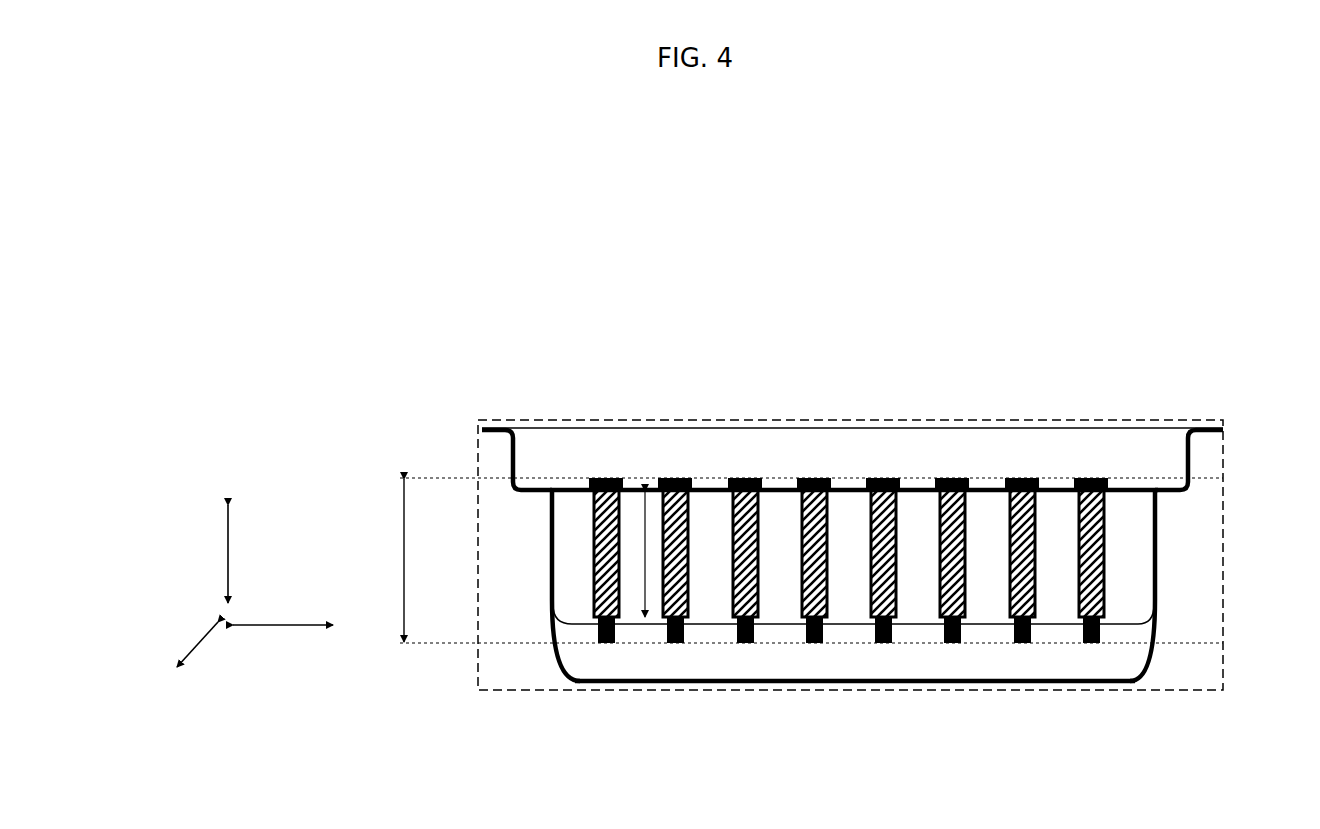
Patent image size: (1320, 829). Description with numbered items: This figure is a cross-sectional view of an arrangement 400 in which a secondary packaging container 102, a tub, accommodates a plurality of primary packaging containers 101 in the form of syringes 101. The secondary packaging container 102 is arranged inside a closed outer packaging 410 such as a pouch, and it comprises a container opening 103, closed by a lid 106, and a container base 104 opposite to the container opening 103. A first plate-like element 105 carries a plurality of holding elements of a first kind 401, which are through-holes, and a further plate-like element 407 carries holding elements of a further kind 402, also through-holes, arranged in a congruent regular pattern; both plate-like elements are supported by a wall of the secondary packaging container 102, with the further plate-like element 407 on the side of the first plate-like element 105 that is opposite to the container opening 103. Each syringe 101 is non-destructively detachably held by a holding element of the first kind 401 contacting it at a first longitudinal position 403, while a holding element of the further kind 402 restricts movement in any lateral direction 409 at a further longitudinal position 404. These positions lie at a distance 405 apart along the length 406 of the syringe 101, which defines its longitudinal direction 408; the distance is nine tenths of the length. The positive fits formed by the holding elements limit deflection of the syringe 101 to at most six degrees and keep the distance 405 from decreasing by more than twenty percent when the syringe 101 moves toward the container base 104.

The arrangement 400 is at (672, 136).
The primary packaging container 101 is at (1105, 580).
The secondary packaging container 102 is at (1160, 538).
The container opening 103 is at (1127, 475).
The container base 104 is at (862, 690).
The first plate-like element 105 is at (1058, 488).
The lid 106 is at (664, 431).
The holding element of a first kind 401 is at (724, 478).
The holding element of a further kind 402 is at (740, 628).
The first longitudinal position 403 is at (775, 487).
The further longitudinal position 404 is at (755, 630).
The distance 405 is at (650, 626).
The length 406 is at (404, 552).
The further plate-like element 407 is at (1000, 628).
The longitudinal direction 408 is at (228, 550).
The lateral direction 409 is at (210, 640).
The closed outer packaging 410 is at (1184, 692).